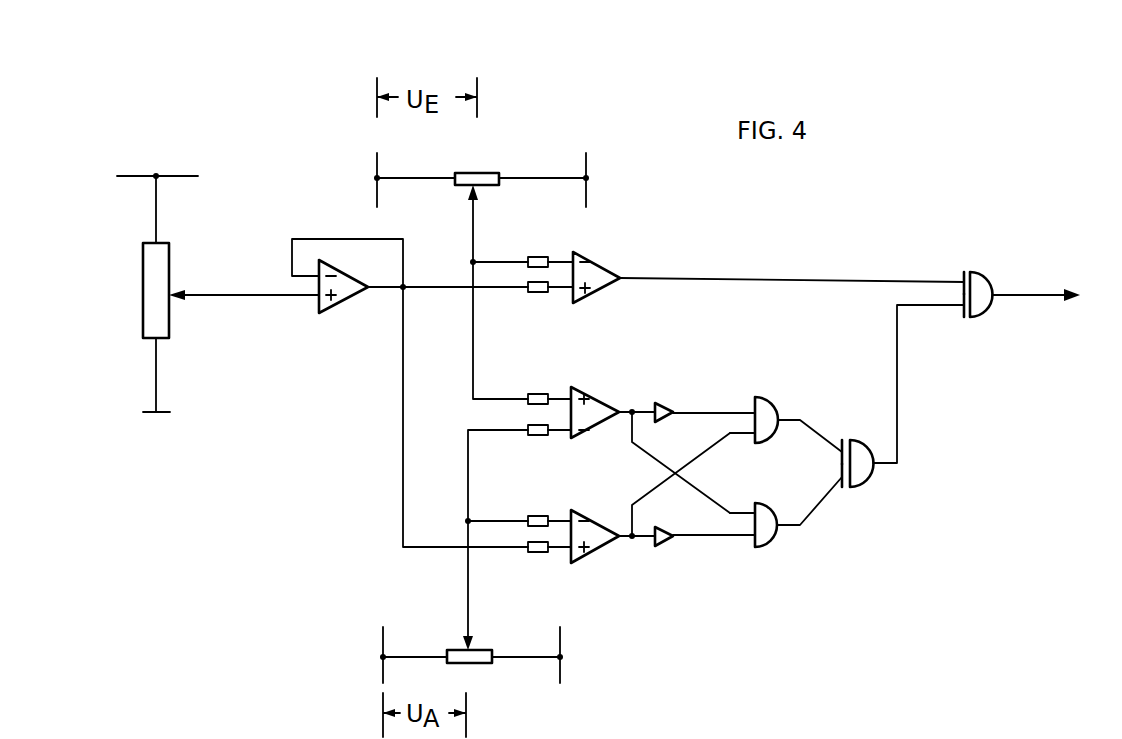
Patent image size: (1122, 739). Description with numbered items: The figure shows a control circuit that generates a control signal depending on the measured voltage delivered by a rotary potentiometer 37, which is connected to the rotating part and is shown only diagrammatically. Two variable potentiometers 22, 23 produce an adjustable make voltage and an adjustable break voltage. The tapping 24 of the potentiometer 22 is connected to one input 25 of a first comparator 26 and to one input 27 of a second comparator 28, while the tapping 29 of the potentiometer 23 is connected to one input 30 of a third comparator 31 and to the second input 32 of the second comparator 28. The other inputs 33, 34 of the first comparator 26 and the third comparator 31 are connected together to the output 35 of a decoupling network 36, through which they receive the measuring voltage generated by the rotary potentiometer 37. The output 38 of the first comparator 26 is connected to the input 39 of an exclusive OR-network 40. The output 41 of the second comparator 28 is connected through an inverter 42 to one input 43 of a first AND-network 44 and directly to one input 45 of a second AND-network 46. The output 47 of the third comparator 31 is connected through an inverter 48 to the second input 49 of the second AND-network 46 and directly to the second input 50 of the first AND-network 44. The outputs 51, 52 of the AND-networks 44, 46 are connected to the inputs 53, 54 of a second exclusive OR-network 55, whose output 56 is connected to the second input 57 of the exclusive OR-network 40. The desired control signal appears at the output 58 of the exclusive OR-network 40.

The variable potentiometer 22 is at (497, 171).
The variable potentiometer 23 is at (491, 650).
The tapping 24 is at (475, 228).
The input 25 is at (561, 258).
The first comparator 26 is at (598, 261).
The input 27 is at (558, 395).
The second comparator 28 is at (590, 398).
The tapping 29 is at (466, 592).
The input 30 is at (556, 517).
The third comparator 31 is at (591, 526).
The second input 32 is at (557, 436).
The other input 33 is at (560, 293).
The other input 34 is at (557, 553).
The output 35 is at (384, 289).
The decoupling network 36 is at (330, 298).
The rotary potentiometer 37 is at (197, 257).
The output 38 is at (635, 283).
The input 39 is at (956, 280).
The exclusive OR-network 40 is at (993, 290).
The output of comparator 28 41 is at (630, 410).
The inverter 42 is at (667, 408).
The input 43 is at (743, 412).
The first AND-network 44 is at (771, 406).
The input 45 is at (746, 513).
The second AND-network 46 is at (772, 540).
The output 47 is at (628, 541).
The inverter 48 is at (668, 542).
The second input 49 is at (746, 547).
The second input 50 is at (744, 437).
The output 51 is at (808, 430).
The output 52 is at (815, 506).
The input 53 is at (847, 445).
The input 54 is at (840, 487).
The second exclusive OR-network 55 is at (858, 452).
The output 56 is at (897, 464).
The second input 57 is at (956, 305).
The output 58 is at (1025, 300).